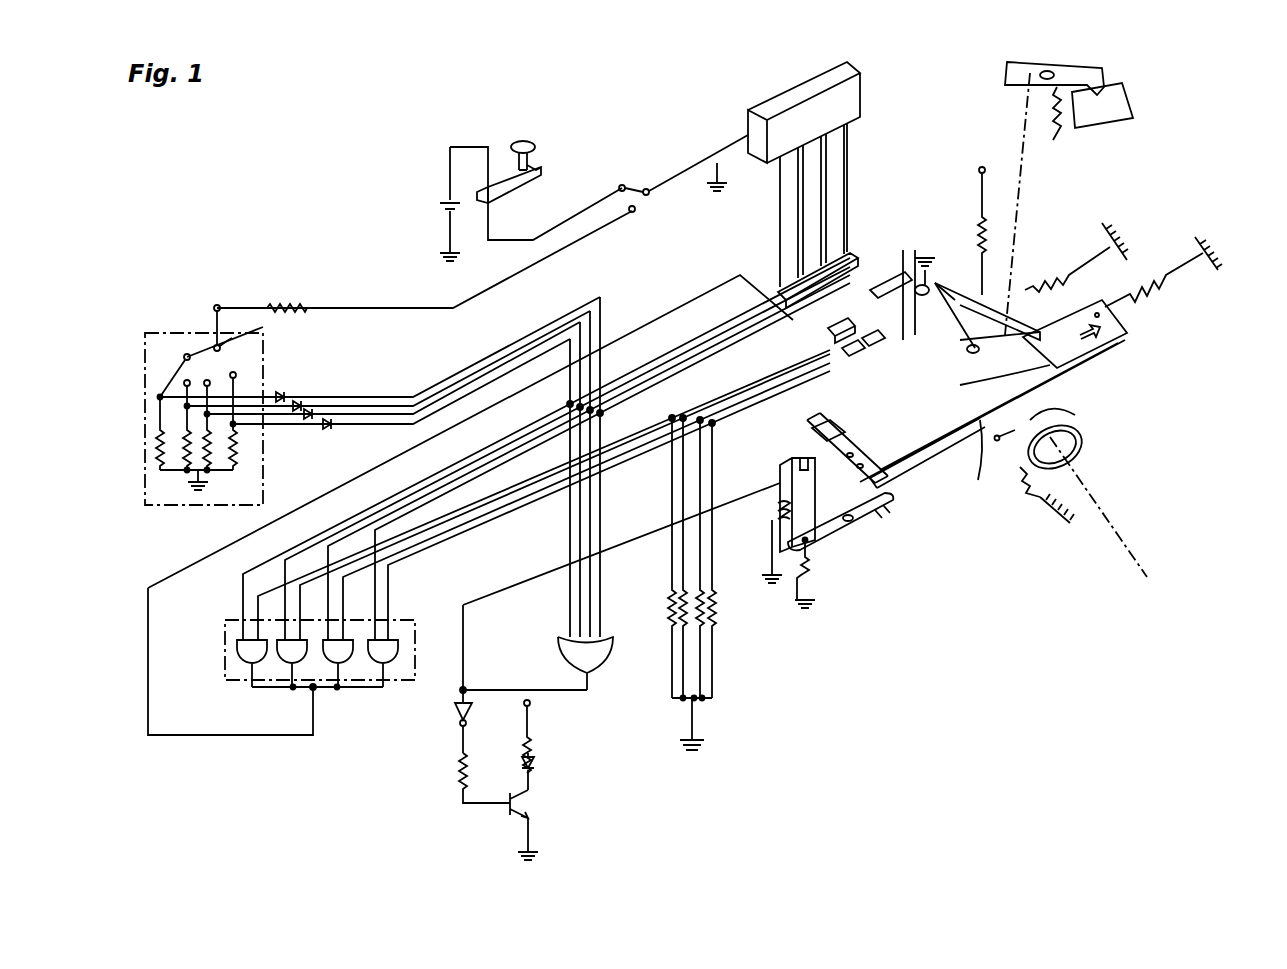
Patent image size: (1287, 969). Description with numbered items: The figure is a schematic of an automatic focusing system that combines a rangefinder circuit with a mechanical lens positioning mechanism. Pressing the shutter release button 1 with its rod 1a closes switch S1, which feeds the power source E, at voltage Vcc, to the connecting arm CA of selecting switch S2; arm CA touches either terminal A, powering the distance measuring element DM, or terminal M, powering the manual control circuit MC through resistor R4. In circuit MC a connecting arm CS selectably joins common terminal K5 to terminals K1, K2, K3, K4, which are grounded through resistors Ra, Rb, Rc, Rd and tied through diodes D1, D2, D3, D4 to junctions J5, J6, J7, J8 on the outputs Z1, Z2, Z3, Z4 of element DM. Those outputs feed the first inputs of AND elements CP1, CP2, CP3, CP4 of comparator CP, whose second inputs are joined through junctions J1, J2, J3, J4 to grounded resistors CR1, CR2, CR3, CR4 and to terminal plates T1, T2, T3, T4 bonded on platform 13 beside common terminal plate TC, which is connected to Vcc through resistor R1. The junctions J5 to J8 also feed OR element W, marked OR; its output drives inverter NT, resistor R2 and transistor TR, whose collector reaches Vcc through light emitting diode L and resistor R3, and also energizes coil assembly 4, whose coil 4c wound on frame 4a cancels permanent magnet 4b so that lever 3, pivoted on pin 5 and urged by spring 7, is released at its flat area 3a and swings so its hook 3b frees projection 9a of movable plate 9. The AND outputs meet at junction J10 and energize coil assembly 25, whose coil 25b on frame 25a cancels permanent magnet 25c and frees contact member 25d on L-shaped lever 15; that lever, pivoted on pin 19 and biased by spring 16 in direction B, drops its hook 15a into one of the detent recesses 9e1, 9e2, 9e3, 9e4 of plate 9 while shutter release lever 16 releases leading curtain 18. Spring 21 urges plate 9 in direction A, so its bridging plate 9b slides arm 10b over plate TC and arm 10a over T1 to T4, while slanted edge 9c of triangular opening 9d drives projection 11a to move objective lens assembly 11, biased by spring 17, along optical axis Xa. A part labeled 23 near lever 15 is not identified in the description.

The shutter release button 1 is at (525, 141).
The rod 1a is at (532, 168).
The switch SW1 S1 is at (541, 176).
The selecting switch SW2 S2 is at (622, 184).
The terminal A is at (647, 188).
The terminal M is at (632, 212).
The connecting arm CA is at (648, 195).
The source of power E is at (441, 204).
The source of electric power Vcc is at (598, 437).
The distance measuring element DM is at (750, 110).
The output Z1 is at (768, 114).
The output Z2 is at (795, 105).
The output Z3 is at (822, 96).
The output Z4 is at (846, 86).
The coil assembly 25 is at (848, 280).
The frame 25a is at (800, 300).
The coil 25b is at (872, 283).
The permanent magnet 25c is at (835, 338).
The contact member 25d is at (905, 262).
The terminal plate T1 is at (843, 352).
The terminal plate T2 is at (863, 342).
The terminal plate T3 is at (925, 282).
The terminal plate T4 is at (942, 300).
The lever 23 is at (938, 282).
The direction B is at (940, 300).
The resistor R1 is at (984, 240).
The manual control circuit MC is at (140, 405).
The resistor R4 is at (287, 305).
The connecting arm CS is at (246, 336).
The terminal K1 is at (234, 374).
The terminal K2 is at (210, 386).
The terminal K3 is at (184, 382).
The terminal K4 is at (183, 356).
The common terminal K5 is at (213, 347).
The resistor Ra is at (230, 447).
The resistor Rb is at (203, 447).
The resistor Rc is at (182, 447).
The resistor Rd is at (157, 447).
The diode D1 is at (329, 430).
The diode D2 is at (309, 420).
The diode D3 is at (302, 403).
The diode D4 is at (281, 393).
The junction J1 is at (668, 427).
The junction J2 is at (681, 416).
The junction J3 is at (698, 418).
The junction J4 is at (712, 420).
The junction J5 is at (566, 405).
The junction J6 is at (577, 406).
The junction J7 is at (592, 407).
The junction J8 is at (603, 411).
The junction J10 is at (316, 692).
The resistor CR1 is at (671, 596).
The resistor CR2 is at (682, 600).
The resistor CR3 is at (699, 608).
The resistor CR4 is at (711, 616).
The comparator CP is at (222, 647).
The AND element CP1 is at (243, 663).
The AND element CP2 is at (288, 663).
The AND element CP3 is at (343, 663).
The AND element CP4 is at (388, 663).
The coil assembly 4 is at (770, 482).
The OR element W is at (556, 663).
The OR element OR is at (585, 663).
The inverter NT is at (470, 712).
The resistor R2 is at (459, 768).
The resistor R3 is at (535, 745).
The light emitting diode L is at (534, 765).
The transistor TR is at (530, 803).
The frame 4a is at (779, 508).
The permanent magnet 4b is at (782, 490).
The coil 4c is at (773, 558).
The arm 10a is at (805, 430).
The arm 10b is at (772, 473).
The platform 13 is at (812, 425).
The lever 3 is at (830, 548).
The bent-over portion 3a is at (810, 598).
The hook 3b is at (890, 512).
The pin 5 is at (845, 535).
The urging spring 7 is at (803, 590).
The movable plate 9 is at (900, 462).
The projection 9a is at (852, 522).
The bridging plate 9b is at (812, 462).
The slanted edge 9c is at (1078, 455).
The triangular opening 9d is at (1003, 441).
The detent recess 9e1 is at (1060, 365).
The detent recess 9e2 is at (1076, 415).
The detent recess 9e3 is at (1022, 478).
The detent recess 9e4 is at (978, 482).
The common terminal plate TC is at (927, 458).
The L-shaped lever 15 is at (1012, 320).
The hook 15a is at (1080, 318).
The spring / shutter release lever 16 is at (1075, 72).
The leading curtain 18 is at (1128, 104).
The pin 19 is at (1005, 318).
The spring means 21 is at (1160, 293).
The objective lens assembly 11 is at (1080, 465).
The projection 11a is at (1045, 385).
The urging spring 17 is at (1040, 500).
The optical axis Xa is at (1130, 550).